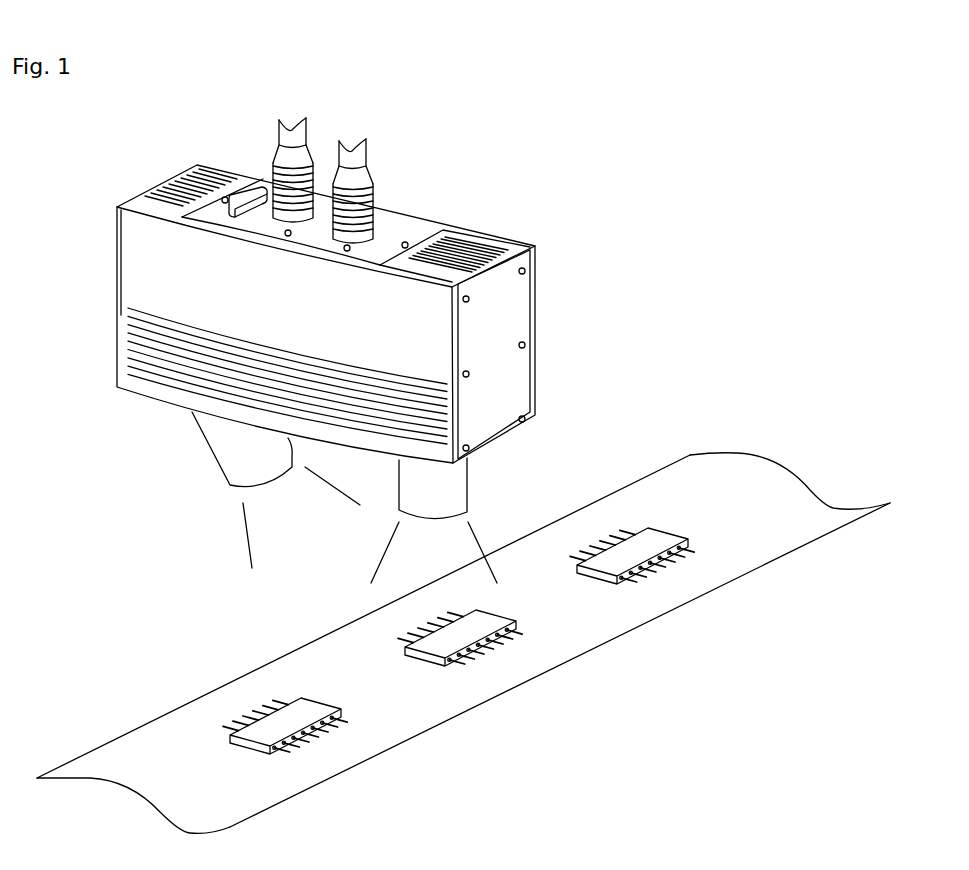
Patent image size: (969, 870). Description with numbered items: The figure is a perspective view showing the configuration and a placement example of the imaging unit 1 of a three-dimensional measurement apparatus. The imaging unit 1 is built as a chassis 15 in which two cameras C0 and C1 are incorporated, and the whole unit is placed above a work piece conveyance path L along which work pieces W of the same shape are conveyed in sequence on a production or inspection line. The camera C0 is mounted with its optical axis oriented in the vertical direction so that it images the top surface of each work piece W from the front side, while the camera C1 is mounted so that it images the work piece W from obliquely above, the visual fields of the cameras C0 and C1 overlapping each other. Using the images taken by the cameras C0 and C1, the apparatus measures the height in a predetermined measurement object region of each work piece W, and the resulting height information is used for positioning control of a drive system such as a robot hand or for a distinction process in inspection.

The imaging unit 1 is at (411, 212).
The chassis 15 is at (522, 303).
The camera C0 is at (459, 490).
The camera C1 is at (232, 466).
The work piece W is at (658, 535).
The work piece conveyance path L is at (683, 597).